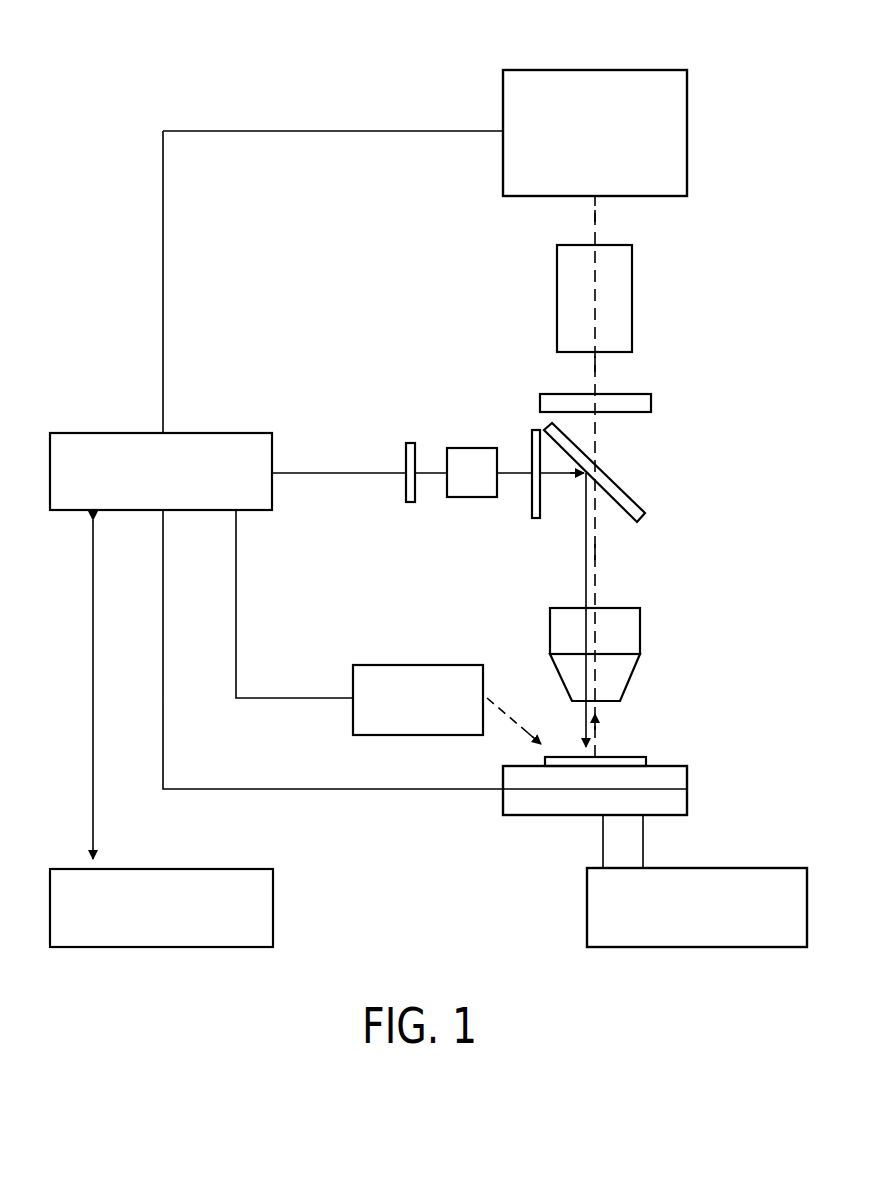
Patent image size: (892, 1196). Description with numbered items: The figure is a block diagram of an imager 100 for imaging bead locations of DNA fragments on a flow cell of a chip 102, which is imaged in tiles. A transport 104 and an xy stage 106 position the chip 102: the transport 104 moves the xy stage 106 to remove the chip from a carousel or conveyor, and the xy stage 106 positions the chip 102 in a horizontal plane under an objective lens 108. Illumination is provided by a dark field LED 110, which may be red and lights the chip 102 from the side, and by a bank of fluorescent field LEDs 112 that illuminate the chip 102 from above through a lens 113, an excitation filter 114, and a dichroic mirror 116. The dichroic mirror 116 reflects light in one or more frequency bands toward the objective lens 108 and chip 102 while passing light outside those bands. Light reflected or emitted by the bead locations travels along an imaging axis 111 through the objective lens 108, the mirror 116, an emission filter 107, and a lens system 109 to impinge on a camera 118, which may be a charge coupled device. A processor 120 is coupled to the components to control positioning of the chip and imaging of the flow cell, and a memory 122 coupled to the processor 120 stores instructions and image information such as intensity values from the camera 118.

The imager 100 is at (128, 84).
The chip 102 is at (637, 757).
The transport 104 is at (587, 918).
The xy stage 106 is at (687, 804).
The emission filter 107 is at (651, 403).
The objective lens 108 is at (640, 632).
The lens system 109 is at (632, 305).
The dark field LED 110 is at (375, 665).
The imaging axis 111 is at (603, 232).
The fluorescent LEDs 112 is at (406, 448).
The lens 113 is at (462, 448).
The excitation filter 114 is at (531, 501).
The dichroic mirror 116 is at (640, 503).
The camera 118 is at (687, 109).
The processor 120 is at (88, 433).
The memory 122 is at (140, 947).